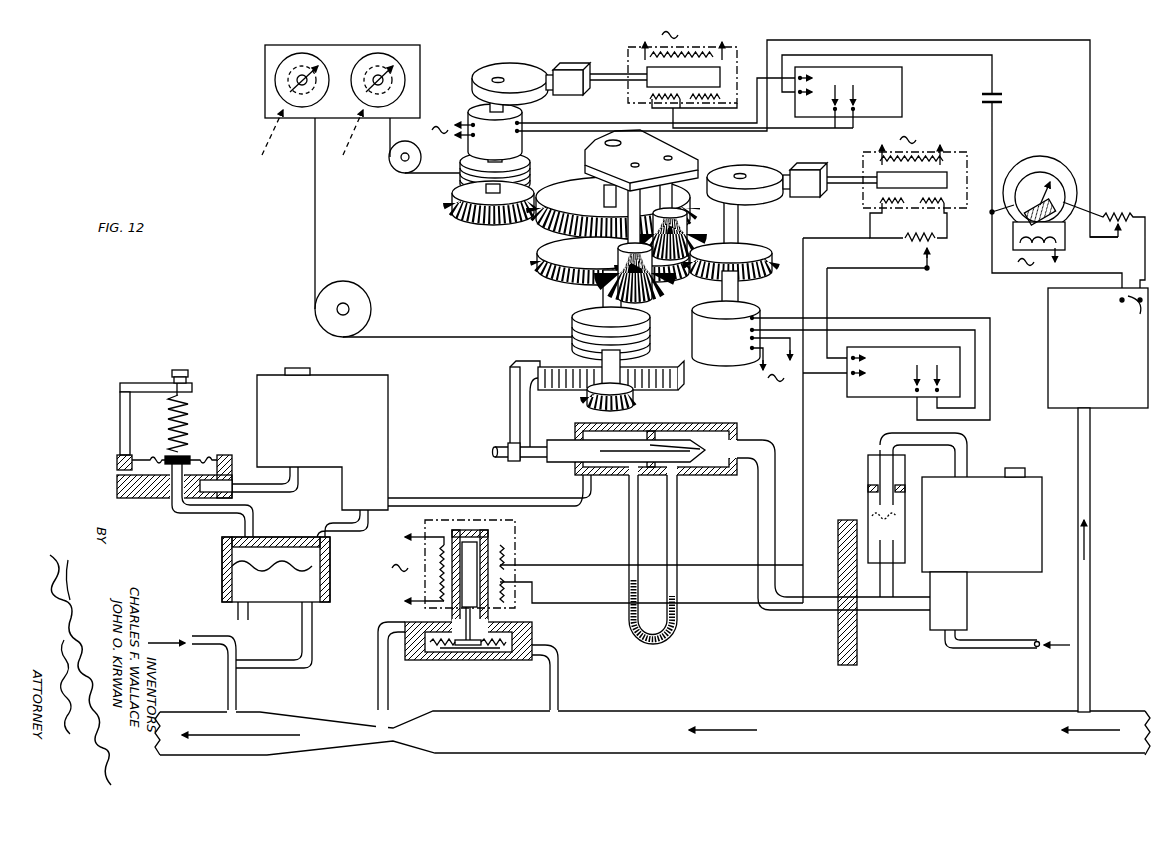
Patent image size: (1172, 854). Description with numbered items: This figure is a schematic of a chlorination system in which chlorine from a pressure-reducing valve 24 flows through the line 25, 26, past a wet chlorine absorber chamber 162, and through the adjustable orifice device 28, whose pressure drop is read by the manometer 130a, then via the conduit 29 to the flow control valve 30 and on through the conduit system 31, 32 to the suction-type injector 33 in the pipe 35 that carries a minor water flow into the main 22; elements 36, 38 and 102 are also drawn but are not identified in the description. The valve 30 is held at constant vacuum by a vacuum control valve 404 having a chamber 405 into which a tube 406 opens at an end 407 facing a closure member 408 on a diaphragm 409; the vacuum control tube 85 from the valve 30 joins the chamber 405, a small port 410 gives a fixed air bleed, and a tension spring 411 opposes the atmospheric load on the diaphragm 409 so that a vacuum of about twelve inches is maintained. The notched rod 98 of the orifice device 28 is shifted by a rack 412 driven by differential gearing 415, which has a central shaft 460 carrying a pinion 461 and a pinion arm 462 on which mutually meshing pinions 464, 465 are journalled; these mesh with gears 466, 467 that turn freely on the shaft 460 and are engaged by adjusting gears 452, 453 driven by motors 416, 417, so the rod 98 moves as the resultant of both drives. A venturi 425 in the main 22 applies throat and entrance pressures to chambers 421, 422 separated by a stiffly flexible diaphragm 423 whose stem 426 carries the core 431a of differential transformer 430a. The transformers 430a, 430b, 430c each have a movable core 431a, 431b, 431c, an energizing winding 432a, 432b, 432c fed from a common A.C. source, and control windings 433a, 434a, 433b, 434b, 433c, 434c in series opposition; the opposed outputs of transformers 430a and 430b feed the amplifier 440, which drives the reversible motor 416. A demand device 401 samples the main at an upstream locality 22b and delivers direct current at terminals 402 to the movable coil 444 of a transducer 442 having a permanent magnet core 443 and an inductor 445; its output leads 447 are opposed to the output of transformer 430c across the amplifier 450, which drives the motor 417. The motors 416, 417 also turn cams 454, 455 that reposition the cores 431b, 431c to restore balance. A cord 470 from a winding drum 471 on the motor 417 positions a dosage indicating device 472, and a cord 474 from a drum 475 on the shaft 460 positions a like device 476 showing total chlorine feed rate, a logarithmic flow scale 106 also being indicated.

The main 22 is at (225, 757).
The locality of the main 22b is at (1022, 757).
The pressure-reducing valve 24 is at (985, 470).
The line 25 is at (912, 612).
The line 26 is at (757, 510).
The adjustable orifice device 28 is at (700, 422).
The conduit 29 is at (405, 497).
The flow control valve 30 is at (388, 407).
The conduit system 31 is at (365, 532).
The conduit system 32 is at (312, 638).
The suction-type injector 33 is at (228, 660).
The pipe 35 is at (230, 686).
The chlorine inlet 36 is at (990, 652).
The wall 38 is at (836, 640).
The vacuum control tube 85 is at (272, 492).
The notched rod 98 is at (575, 466).
The needle valve 102 is at (686, 460).
The scale 106 is at (222, 578).
The manometer 130a is at (670, 634).
The wet chlorine absorber chamber 162 is at (867, 493).
The demand-determining device 401 is at (1130, 402).
The terminals 402 is at (1144, 310).
The vacuum control valve 404 is at (157, 450).
The chamber 405 is at (149, 458).
The tube 406 is at (179, 515).
The open end 407 is at (165, 490).
The closure member 408 is at (192, 456).
The diaphragm 409 is at (206, 458).
The port 410 is at (116, 463).
The tension spring 411 is at (190, 410).
The rack 412 is at (558, 364).
The differential gearing 415 is at (462, 268).
The motor 416 is at (732, 352).
The motor 417 is at (470, 106).
The chamber 421 is at (455, 663).
The chamber 422 is at (500, 660).
The diaphragm 423 is at (442, 660).
The venturi 425 is at (398, 745).
The stem 426 is at (470, 662).
The differential transformer 430a is at (587, 547).
The differential transformer 430b is at (899, 180).
The differential transformer 430c is at (667, 84).
The movable core 431a is at (468, 542).
The movable core 431b is at (945, 178).
The movable core 431c is at (722, 70).
The energizing winding 432a is at (428, 558).
The energizing winding 432b is at (920, 147).
The energizing winding 432c is at (690, 50).
The control winding 433a is at (515, 553).
The control winding 433b is at (946, 210).
The control winding 433c is at (722, 108).
The control winding 434a is at (515, 598).
The control winding 434b is at (874, 209).
The control winding 434c is at (628, 100).
The electronic amplifier 440 is at (886, 397).
The transducer 442 is at (1068, 221).
The permanent magnet core 443 is at (1045, 172).
The movable coil 444 is at (1072, 210).
The inductor device 445 is at (1064, 246).
The output leads 447 is at (1090, 78).
The electronic amplifier 450 is at (905, 93).
The adjusting gear 452 is at (760, 276).
The adjusting gear 453 is at (458, 206).
The cam 454 is at (768, 192).
The cam 455 is at (512, 63).
The central shaft 460 is at (600, 296).
The pinion 461 is at (633, 400).
The pinion arm 462 is at (652, 140).
The pinion 464 is at (648, 290).
The pinion 465 is at (688, 224).
The gear 466 is at (680, 272).
The gear 467 is at (560, 220).
The cord 470 is at (432, 176).
The winding drum 471 is at (528, 168).
The indicating or recording device 472 is at (395, 75).
The cord 474 is at (432, 336).
The winding drum 475 is at (576, 327).
The indicating or recording device 476 is at (278, 90).